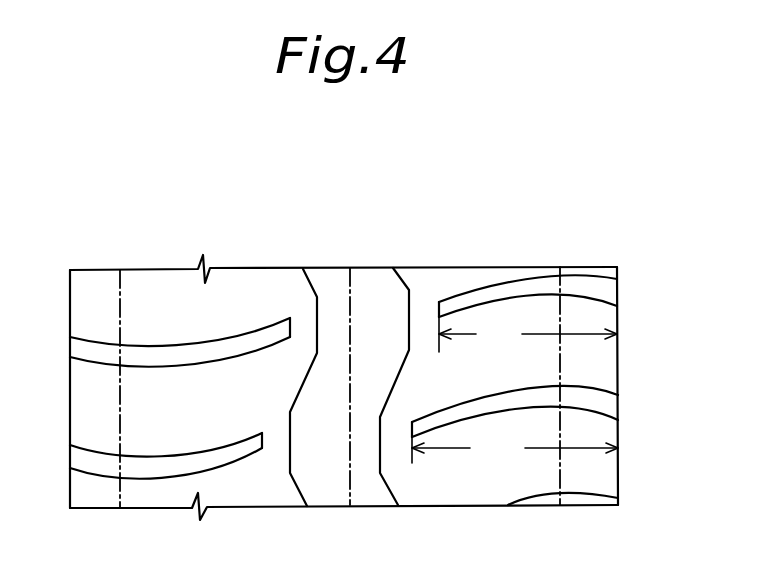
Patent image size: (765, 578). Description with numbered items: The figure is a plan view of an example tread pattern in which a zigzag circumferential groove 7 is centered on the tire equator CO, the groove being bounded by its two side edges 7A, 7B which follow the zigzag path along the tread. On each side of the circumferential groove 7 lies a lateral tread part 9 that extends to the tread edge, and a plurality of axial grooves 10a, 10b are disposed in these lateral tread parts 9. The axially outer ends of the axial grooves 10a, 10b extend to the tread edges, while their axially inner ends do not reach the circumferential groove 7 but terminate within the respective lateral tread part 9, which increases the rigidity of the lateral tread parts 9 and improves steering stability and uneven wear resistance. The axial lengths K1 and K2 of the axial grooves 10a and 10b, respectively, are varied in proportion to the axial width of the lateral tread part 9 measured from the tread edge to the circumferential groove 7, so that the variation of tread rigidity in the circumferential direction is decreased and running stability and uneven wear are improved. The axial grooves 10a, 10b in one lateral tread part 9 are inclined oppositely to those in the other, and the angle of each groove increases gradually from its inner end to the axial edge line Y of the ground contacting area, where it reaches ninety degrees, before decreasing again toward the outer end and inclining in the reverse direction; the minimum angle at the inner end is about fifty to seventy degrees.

The circumferential groove 7 is at (376, 381).
The circumferential groove edge 7A is at (383, 268).
The circumferential groove edge 7B is at (316, 283).
The lateral tread part 9 is at (160, 278).
The axial groove 10a is at (600, 402).
The axial groove 10b is at (600, 293).
The tire equator CO is at (368, 277).
The axial edge line of the ground contacting area Y is at (120, 297).
The axial length of axial groove K1 is at (515, 448).
The axial length of axial groove K2 is at (528, 334).